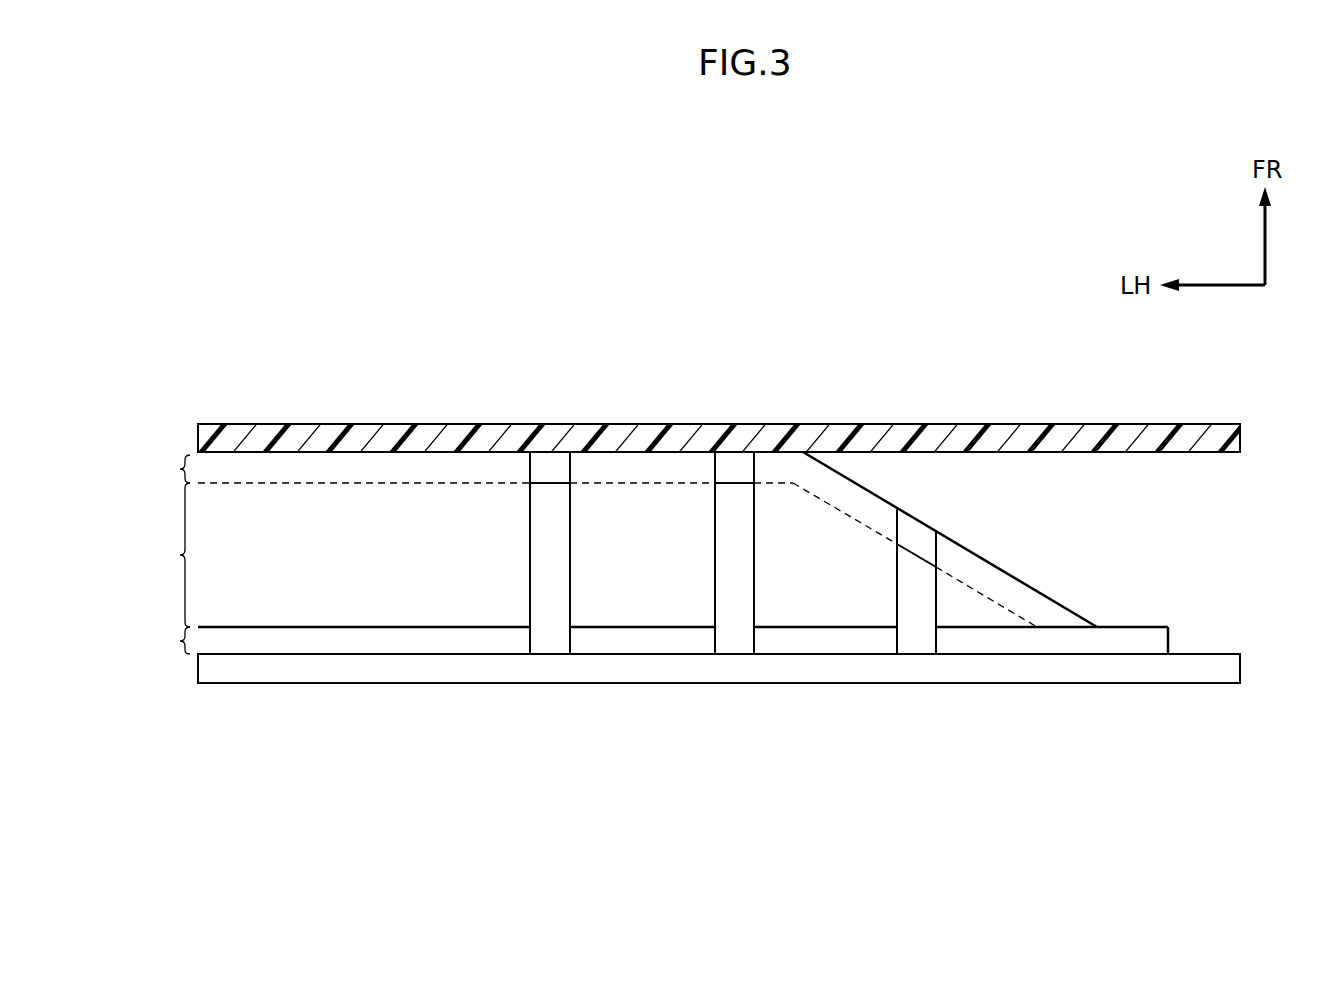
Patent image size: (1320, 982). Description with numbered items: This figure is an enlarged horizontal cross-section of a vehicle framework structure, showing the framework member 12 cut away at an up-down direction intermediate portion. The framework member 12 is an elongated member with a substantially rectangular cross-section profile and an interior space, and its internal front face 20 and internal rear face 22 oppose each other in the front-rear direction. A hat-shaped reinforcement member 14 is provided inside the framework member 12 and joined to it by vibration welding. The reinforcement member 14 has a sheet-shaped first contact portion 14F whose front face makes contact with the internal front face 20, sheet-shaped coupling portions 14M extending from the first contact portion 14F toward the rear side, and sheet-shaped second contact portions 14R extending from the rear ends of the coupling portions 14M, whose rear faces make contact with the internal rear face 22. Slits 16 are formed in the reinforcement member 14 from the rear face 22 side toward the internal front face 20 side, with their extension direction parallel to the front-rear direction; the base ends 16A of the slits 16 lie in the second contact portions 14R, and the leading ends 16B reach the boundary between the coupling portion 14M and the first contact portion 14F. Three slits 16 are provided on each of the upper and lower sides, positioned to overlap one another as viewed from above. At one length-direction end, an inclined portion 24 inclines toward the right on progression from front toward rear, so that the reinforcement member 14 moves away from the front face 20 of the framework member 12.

The framework member 12 is at (717, 418).
The reinforcement member 14 is at (1032, 584).
The first contact portion 14F is at (159, 471).
The coupling portion 14M is at (158, 555).
The second contact portion 14R is at (159, 642).
The slit 16 is at (550, 543).
The base end 16A is at (553, 650).
The leading end 16B is at (548, 466).
The internal front face 20 is at (1168, 452).
The internal rear face 22 is at (1187, 654).
The inclined portion 24 is at (970, 565).